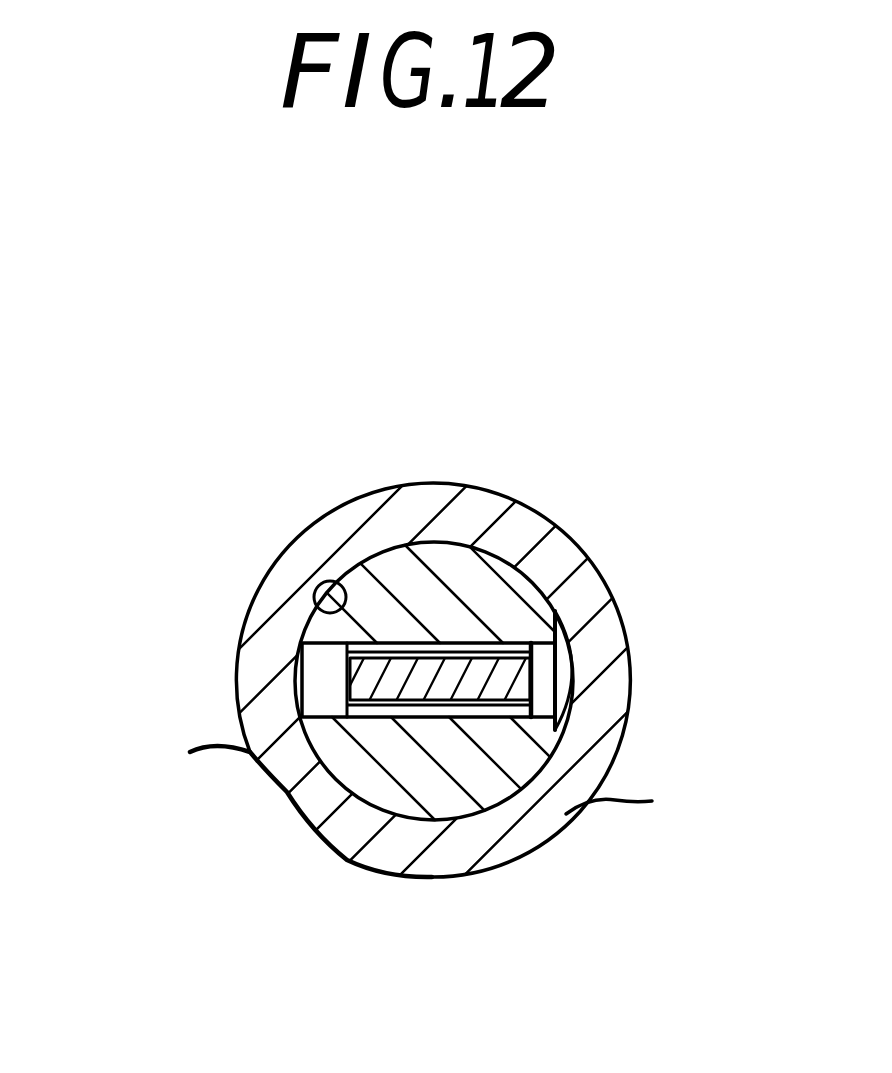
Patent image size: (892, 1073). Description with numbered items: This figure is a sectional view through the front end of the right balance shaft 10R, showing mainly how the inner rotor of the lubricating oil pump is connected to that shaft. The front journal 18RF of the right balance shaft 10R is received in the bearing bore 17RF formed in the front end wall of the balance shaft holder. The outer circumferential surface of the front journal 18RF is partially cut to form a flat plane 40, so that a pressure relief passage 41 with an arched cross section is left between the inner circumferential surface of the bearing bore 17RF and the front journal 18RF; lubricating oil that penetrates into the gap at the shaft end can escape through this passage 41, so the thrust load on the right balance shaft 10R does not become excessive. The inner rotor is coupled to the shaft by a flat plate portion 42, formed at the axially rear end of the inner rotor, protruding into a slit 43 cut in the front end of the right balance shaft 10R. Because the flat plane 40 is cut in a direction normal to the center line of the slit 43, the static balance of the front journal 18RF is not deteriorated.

The right balance shaft 10R is at (258, 864).
The bearing bore 17RF is at (320, 612).
The front journal 18RF is at (395, 563).
The flat plane 40 is at (567, 722).
The pressure relief passage 41 is at (570, 648).
The flat plate portion 42 is at (503, 688).
The slit 43 is at (310, 688).